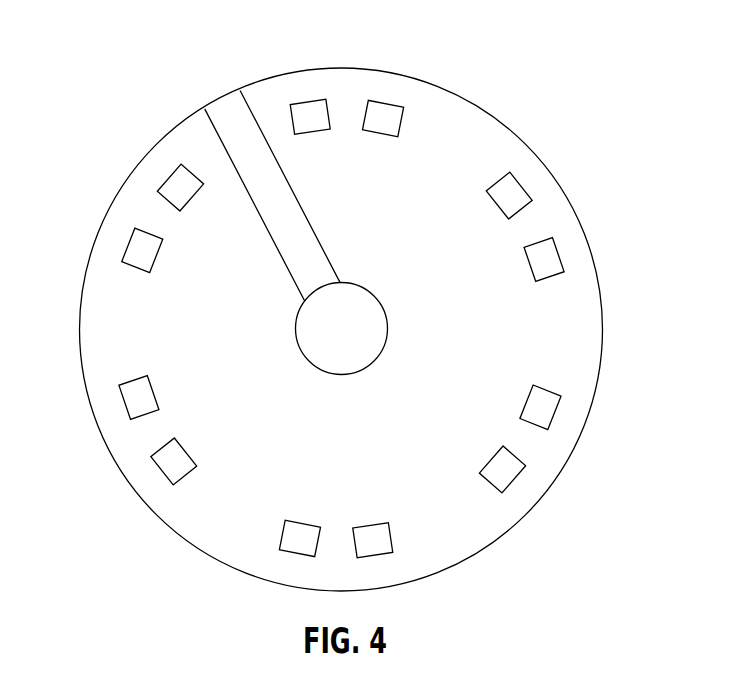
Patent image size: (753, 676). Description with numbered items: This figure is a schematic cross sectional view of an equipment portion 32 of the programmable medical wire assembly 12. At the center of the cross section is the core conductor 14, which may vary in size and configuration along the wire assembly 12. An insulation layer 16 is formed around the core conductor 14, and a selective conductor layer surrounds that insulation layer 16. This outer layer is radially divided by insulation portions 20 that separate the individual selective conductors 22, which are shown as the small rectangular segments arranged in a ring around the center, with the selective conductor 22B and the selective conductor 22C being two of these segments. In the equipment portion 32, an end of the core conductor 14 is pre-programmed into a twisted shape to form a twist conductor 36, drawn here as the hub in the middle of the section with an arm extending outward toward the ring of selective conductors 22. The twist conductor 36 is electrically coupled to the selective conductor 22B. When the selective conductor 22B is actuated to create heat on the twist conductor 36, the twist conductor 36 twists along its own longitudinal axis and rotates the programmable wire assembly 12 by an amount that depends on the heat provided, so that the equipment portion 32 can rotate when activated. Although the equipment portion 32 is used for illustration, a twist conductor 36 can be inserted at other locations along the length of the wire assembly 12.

The wire assembly 12 is at (116, 196).
The core conductor 14 is at (343, 328).
The insulation layer 16 is at (223, 295).
The insulation portions 20 is at (277, 110).
The selective conductors 22 is at (515, 195).
The selective conductor 22B is at (220, 112).
The selective conductor 22C is at (508, 473).
The equipment portion 32 is at (494, 68).
The twist conductor 36 is at (362, 307).